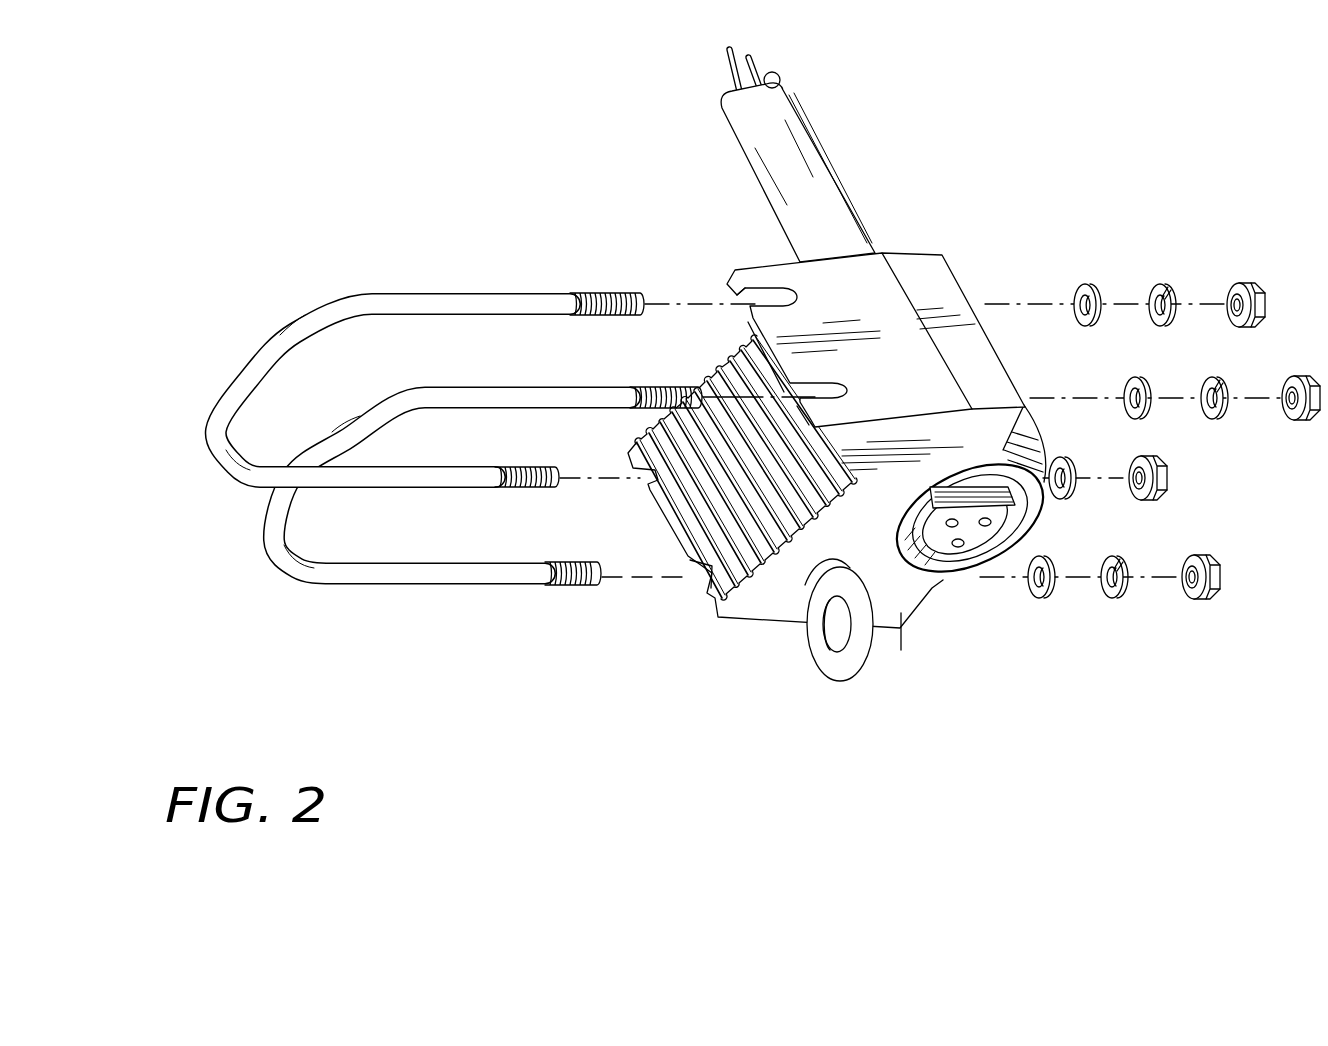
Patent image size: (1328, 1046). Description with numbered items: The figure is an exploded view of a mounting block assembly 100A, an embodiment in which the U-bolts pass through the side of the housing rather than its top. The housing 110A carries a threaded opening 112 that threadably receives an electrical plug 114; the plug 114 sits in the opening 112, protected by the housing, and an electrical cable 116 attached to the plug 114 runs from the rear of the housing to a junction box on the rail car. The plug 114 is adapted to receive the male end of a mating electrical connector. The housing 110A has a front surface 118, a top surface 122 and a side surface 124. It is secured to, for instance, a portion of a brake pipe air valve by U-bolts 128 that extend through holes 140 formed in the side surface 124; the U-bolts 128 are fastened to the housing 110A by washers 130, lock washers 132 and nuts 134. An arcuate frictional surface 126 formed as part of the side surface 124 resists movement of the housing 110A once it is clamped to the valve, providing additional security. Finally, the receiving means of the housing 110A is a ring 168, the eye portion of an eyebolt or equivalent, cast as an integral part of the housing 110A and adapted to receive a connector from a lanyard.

The mounting block assembly 100A is at (503, 651).
The housing 110A is at (752, 262).
The threaded opening 112 is at (940, 563).
The electrical plug 114 is at (980, 542).
The electrical cable 116 is at (818, 166).
The front surface 118 is at (908, 645).
The top surface 122 is at (933, 258).
The side surface 124 is at (718, 613).
The arcuate frictional surface 126 is at (768, 507).
The U-bolts 128 is at (478, 287).
The washers 130 is at (1090, 272).
The lock washers 132 is at (1168, 278).
The nuts 134 is at (1255, 282).
The holes 140 is at (702, 580).
The ring 168 is at (833, 667).